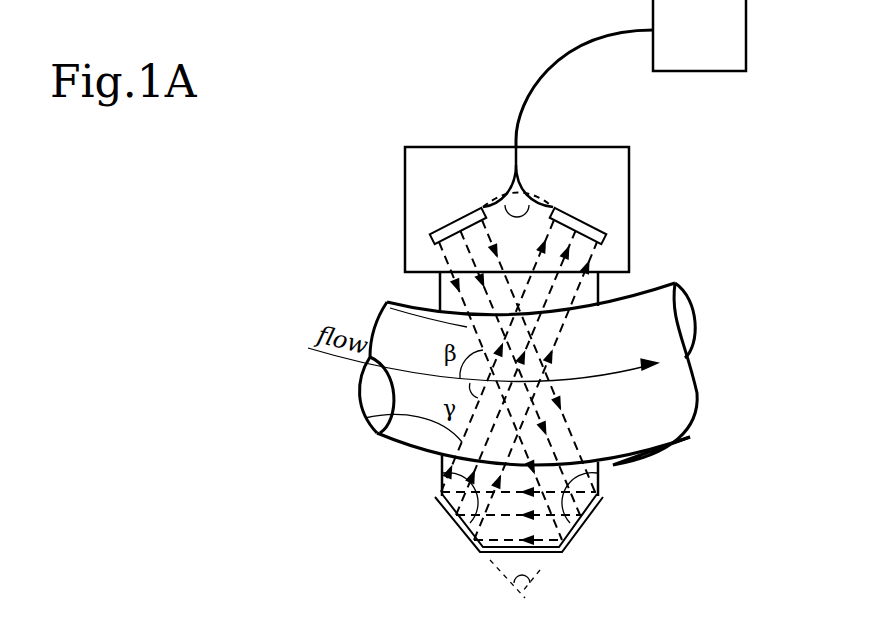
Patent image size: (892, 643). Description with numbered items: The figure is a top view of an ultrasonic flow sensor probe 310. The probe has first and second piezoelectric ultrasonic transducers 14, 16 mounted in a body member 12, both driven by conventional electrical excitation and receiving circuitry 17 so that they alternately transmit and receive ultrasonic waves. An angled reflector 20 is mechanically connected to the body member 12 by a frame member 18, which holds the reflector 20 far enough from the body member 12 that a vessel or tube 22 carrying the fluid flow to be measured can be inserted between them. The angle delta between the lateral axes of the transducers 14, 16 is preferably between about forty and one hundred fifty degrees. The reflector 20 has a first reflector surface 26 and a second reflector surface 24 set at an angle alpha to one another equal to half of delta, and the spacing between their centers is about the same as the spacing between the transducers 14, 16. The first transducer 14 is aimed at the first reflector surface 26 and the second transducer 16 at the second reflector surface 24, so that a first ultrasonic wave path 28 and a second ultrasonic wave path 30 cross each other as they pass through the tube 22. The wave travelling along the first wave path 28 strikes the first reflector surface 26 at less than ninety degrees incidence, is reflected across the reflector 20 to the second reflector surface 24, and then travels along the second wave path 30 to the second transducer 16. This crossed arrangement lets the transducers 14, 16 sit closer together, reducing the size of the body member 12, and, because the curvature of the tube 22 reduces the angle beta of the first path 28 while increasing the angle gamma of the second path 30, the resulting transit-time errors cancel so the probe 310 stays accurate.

The ultrasonic flow sensor probe 310 is at (350, 140).
The body member 12 is at (438, 148).
The first piezoelectric ultrasonic transducer 14 is at (455, 213).
The second piezoelectric ultrasonic transducer 16 is at (590, 212).
The electrical excitation and receiving circuitry 17 is at (746, 45).
The frame member 18 is at (602, 288).
The angled reflector 20 is at (568, 555).
The tube 22 is at (397, 442).
The second reflector surface 24 is at (442, 470).
The first reflector surface 26 is at (600, 472).
The first ultrasonic wave path 28 is at (467, 327).
The second ultrasonic wave path 30 is at (365, 418).